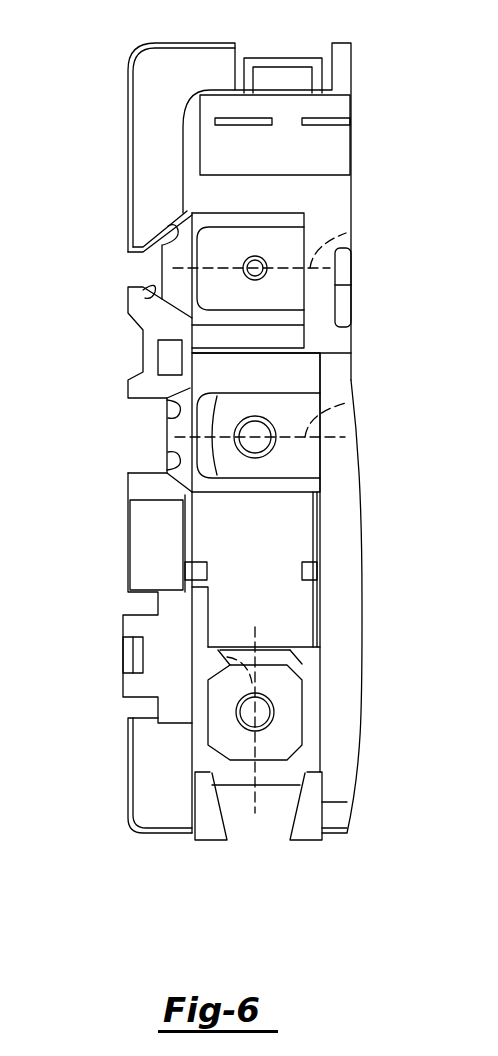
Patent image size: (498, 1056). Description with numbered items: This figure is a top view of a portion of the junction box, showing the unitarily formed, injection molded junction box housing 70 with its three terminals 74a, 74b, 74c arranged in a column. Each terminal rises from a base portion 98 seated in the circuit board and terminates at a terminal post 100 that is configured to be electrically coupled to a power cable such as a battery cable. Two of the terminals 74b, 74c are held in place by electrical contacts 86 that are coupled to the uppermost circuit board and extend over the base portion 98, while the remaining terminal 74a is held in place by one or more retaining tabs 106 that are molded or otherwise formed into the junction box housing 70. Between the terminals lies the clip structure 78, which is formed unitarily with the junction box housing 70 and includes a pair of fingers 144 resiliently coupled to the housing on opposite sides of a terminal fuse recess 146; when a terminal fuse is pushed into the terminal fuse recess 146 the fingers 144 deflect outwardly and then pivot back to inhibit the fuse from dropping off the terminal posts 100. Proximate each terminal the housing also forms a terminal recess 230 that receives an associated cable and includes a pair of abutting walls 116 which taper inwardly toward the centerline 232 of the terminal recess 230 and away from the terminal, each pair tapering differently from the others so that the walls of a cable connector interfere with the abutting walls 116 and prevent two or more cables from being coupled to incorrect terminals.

The junction box housing 70 is at (150, 38).
The terminal 74a is at (282, 690).
The terminal 74b is at (287, 420).
The terminal 74c is at (283, 252).
The clip structure 78 is at (156, 562).
The electrical contact 86 is at (255, 235).
The base portion 98 is at (292, 713).
The terminal post 100 is at (257, 276).
The retaining tab 106 is at (212, 753).
The abutting wall 116 is at (177, 245).
The finger 144 is at (302, 570).
The terminal fuse recess 146 is at (293, 610).
The terminal recess 230 is at (146, 270).
The centerline 232 is at (348, 233).